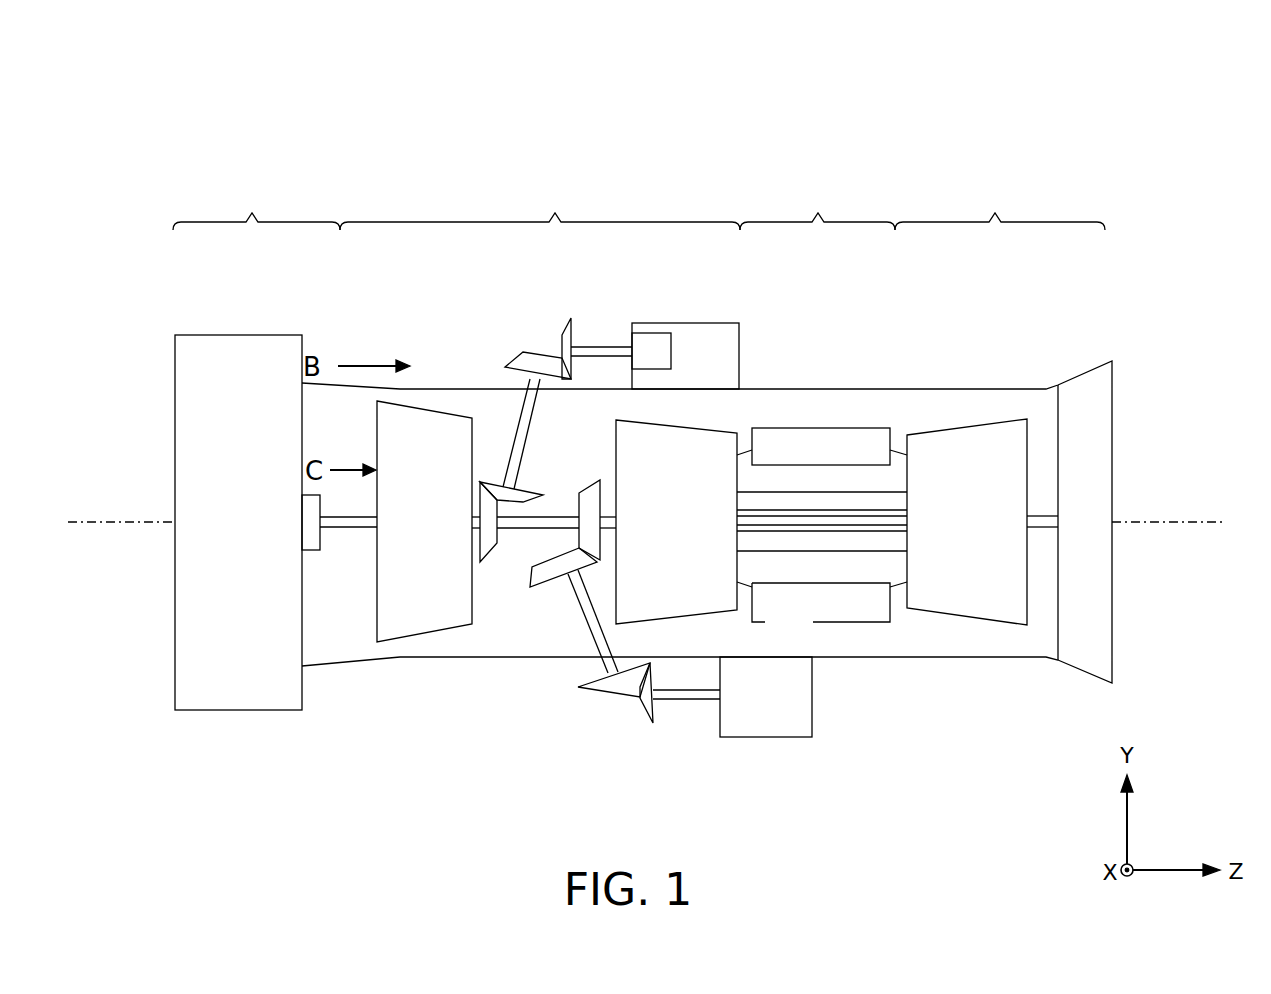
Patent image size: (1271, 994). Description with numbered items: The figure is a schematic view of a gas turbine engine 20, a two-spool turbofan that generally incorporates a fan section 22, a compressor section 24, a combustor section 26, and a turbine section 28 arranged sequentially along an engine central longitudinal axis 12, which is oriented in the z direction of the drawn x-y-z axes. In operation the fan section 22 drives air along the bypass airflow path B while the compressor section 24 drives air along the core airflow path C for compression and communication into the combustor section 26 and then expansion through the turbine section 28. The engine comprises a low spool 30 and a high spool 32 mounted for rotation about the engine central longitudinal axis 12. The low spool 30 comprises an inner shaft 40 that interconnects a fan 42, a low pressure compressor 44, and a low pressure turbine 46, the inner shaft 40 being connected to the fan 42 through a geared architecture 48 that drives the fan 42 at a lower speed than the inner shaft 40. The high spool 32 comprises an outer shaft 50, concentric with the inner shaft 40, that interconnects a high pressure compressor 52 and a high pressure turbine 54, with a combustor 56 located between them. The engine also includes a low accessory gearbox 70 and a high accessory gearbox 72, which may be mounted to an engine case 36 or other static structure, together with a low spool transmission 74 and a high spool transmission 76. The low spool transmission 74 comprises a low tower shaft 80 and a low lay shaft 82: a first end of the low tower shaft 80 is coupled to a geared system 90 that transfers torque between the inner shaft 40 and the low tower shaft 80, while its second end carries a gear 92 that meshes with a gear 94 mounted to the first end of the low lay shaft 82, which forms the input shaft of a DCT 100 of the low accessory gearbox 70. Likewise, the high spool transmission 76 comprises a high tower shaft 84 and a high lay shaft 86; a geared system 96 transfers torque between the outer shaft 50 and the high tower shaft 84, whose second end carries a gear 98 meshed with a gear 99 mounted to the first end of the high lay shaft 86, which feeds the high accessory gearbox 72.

The engine central longitudinal axis 12 is at (78, 521).
The gas turbine engine 20 is at (223, 91).
The fan section 22 is at (256, 206).
The compressor section 24 is at (540, 206).
The combustor section 26 is at (817, 206).
The turbine section 28 is at (1000, 206).
The low spool 30 is at (803, 541).
The high spool 32 is at (755, 562).
The engine case 36 is at (400, 657).
The inner shaft 40 is at (523, 520).
The fan 42 is at (238, 522).
The low pressure compressor 44 is at (396, 521).
The low pressure turbine 46 is at (1083, 592).
The geared architecture 48 is at (311, 538).
The outer shaft 50 is at (830, 540).
The high pressure compressor 52 is at (676, 522).
The high pressure turbine 54 is at (982, 522).
The combustor 56 is at (822, 525).
The low accessory gearbox 70 is at (685, 356).
The high accessory gearbox 72 is at (766, 697).
The low spool transmission 74 is at (490, 376).
The high spool transmission 76 is at (565, 682).
The low tower shaft 80 is at (532, 408).
The low lay shaft 82 is at (603, 350).
The high tower shaft 84 is at (588, 622).
The high lay shaft 86 is at (705, 700).
The geared system 90 is at (495, 469).
The gear 92 is at (541, 356).
The gear 94 is at (567, 334).
The geared system 96 is at (560, 536).
The gear 98 is at (604, 690).
The gear 99 is at (648, 700).
The DCT 100 is at (650, 360).